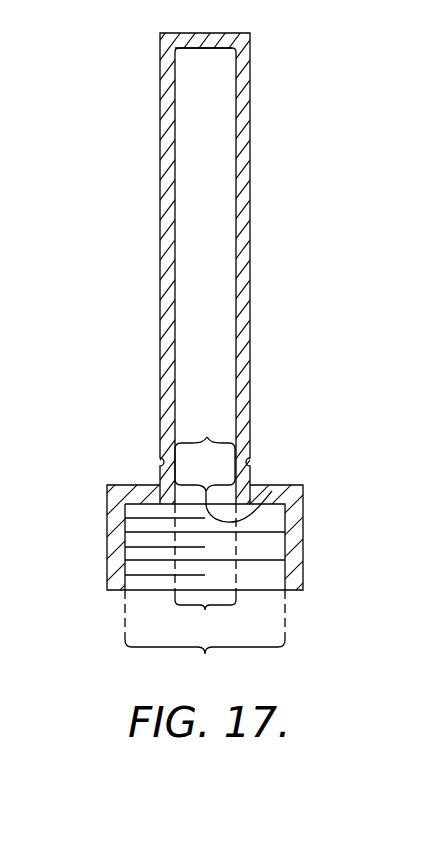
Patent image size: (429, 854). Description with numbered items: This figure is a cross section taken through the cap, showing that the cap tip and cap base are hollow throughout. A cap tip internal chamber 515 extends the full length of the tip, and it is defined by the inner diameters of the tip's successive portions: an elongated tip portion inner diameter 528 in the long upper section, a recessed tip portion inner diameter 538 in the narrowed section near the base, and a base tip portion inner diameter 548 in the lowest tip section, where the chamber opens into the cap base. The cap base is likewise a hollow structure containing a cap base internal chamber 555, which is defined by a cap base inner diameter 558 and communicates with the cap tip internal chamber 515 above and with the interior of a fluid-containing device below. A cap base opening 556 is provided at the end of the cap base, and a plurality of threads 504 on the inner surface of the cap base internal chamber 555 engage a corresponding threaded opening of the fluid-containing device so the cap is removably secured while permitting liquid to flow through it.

The plurality of threads 504 is at (137, 548).
The cap tip internal chamber 515 is at (215, 273).
The elongated tip portion inner diameter 528 is at (175, 124).
The recessed tip portion inner diameter 538 is at (207, 437).
The base tip portion inner diameter 548 is at (272, 491).
The cap base internal chamber 555 is at (273, 552).
The cap base opening 556 is at (205, 610).
The cap base inner diameter 558 is at (205, 654).